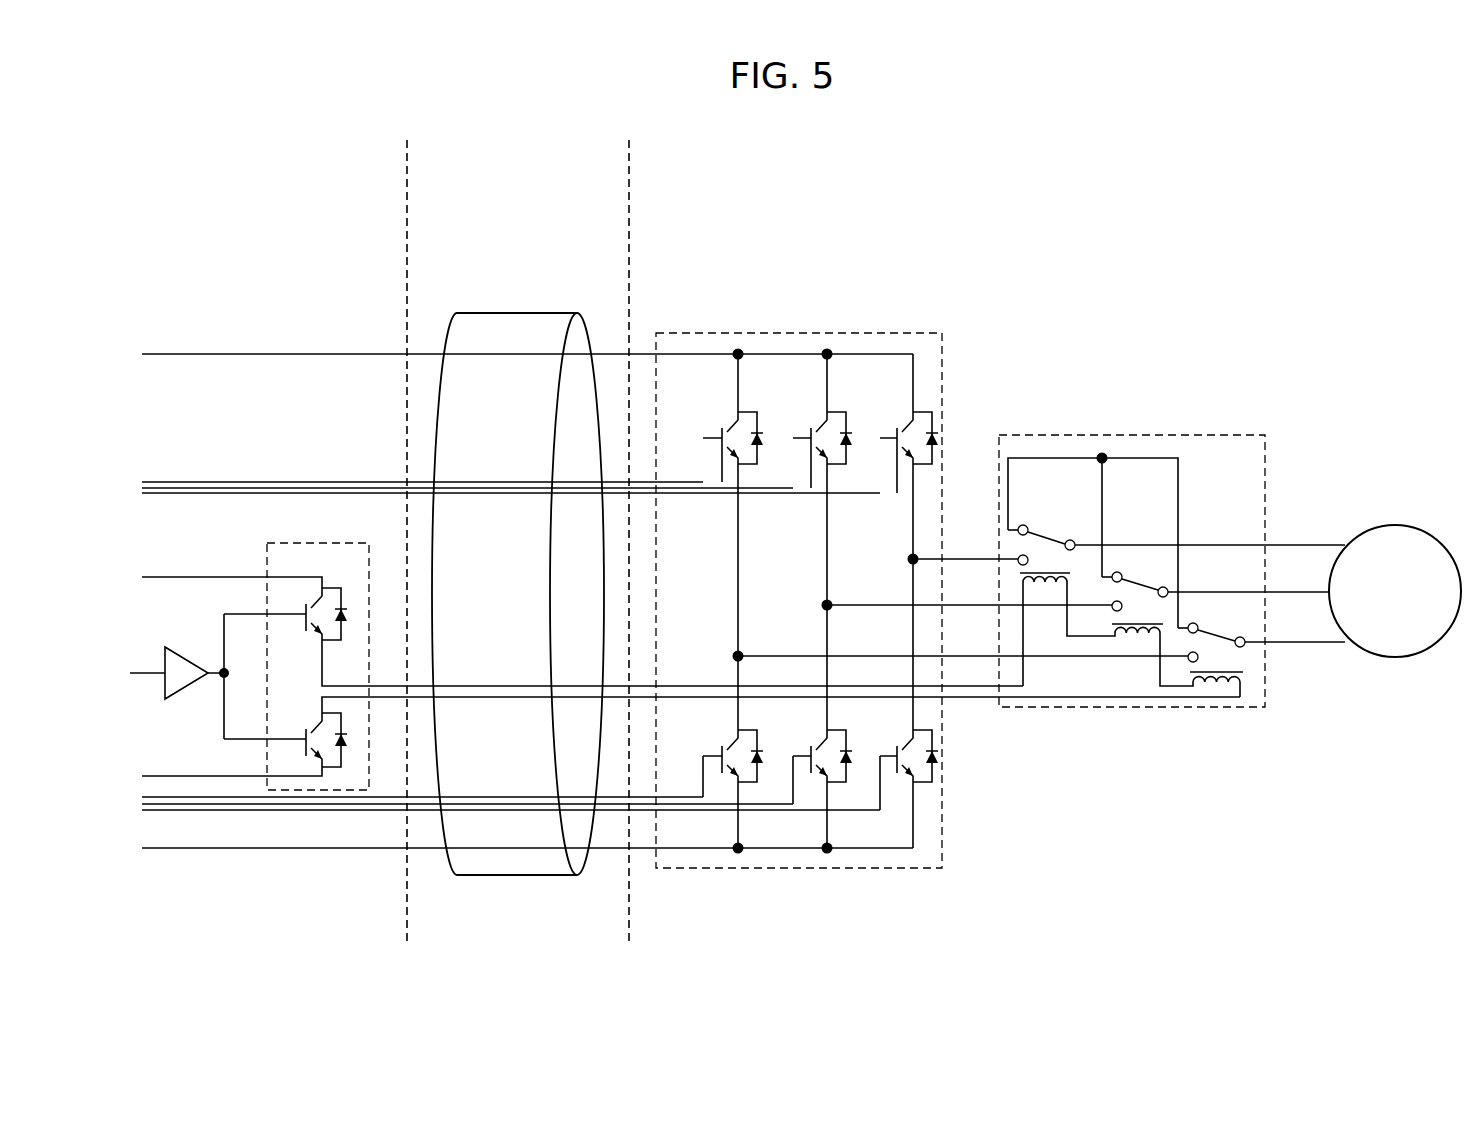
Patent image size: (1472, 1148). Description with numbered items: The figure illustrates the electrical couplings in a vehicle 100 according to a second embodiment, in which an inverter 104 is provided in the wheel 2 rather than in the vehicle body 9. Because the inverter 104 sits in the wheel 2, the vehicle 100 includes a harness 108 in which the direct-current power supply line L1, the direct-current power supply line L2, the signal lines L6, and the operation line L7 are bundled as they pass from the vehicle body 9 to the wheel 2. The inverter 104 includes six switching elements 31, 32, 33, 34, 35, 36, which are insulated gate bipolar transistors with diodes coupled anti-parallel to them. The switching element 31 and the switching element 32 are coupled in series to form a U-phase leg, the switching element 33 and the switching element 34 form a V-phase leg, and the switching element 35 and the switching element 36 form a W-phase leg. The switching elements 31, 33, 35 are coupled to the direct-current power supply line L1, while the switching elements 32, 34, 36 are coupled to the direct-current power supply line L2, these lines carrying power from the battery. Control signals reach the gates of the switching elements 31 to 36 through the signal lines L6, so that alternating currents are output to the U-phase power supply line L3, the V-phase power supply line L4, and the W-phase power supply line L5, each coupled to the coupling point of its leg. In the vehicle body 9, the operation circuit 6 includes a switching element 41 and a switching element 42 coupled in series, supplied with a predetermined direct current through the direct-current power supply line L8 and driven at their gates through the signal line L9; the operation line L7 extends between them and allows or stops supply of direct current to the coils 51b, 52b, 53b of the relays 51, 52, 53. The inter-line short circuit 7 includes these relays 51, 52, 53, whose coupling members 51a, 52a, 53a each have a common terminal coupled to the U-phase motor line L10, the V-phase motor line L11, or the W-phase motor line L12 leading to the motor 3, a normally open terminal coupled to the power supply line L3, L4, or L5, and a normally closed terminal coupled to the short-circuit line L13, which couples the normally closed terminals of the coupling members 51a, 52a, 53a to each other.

The vehicle 100 is at (175, 126).
The vehicle body 9 is at (390, 180).
The harness 108 is at (409, 180).
The wheel 2 is at (758, 180).
The inverter 104 is at (855, 333).
The switching element 31 is at (911, 418).
The switching element 32 is at (911, 736).
The switching element 33 is at (824, 418).
The switching element 34 is at (824, 736).
The switching element 35 is at (735, 418).
The switching element 36 is at (735, 736).
The operation circuit 6 is at (284, 543).
The switching element 41 is at (318, 598).
The switching element 42 is at (318, 720).
The inter-line short circuit 7 is at (1188, 435).
The relay 51 is at (1053, 524).
The relay 52 is at (1134, 566).
The relay 53 is at (1212, 618).
The coupling member 51a is at (1042, 530).
The coupling member 52a is at (1122, 574).
The coupling member 53a is at (1248, 646).
The coil 51b is at (1045, 588).
The coil 52b is at (1137, 638).
The coil 53b is at (1215, 688).
The motor 3 is at (1446, 545).
The direct-current power supply line L1 is at (272, 354).
The direct-current power supply line L2 is at (191, 848).
The U-phase power supply line L3 is at (968, 560).
The V-phase power supply line L4 is at (870, 605).
The W-phase power supply line L5 is at (780, 656).
The signal lines L6 is at (282, 493).
The operation line L7 is at (516, 697).
The direct-current power supply line L8 is at (190, 577).
The signal line L9 is at (143, 673).
The U-phase motor line L10 is at (1282, 545).
The V-phase motor line L11 is at (1306, 592).
The W-phase motor line L12 is at (1333, 645).
The short-circuit line L13 is at (1180, 497).